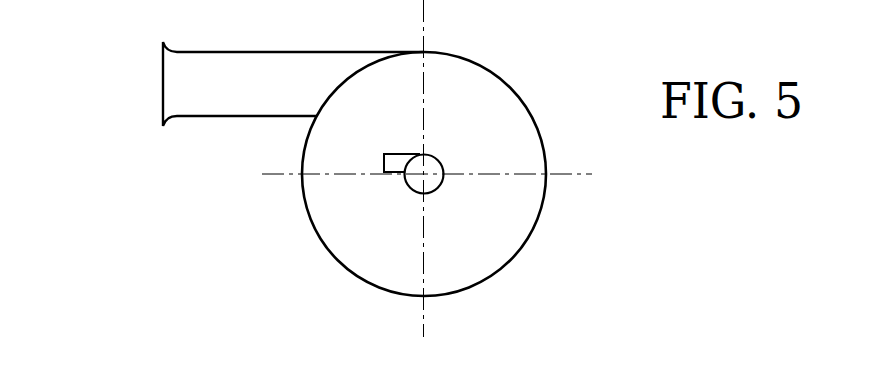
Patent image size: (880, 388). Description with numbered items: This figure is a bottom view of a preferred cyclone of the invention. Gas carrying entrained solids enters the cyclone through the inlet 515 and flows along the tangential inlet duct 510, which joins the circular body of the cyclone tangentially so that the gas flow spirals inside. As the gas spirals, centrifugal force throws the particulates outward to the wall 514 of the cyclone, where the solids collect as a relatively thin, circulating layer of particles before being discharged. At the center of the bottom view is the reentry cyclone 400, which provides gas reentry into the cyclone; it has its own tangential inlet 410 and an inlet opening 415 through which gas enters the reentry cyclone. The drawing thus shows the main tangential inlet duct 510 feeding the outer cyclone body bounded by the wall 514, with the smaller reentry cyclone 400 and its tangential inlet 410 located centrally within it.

The reentry cyclone 400 is at (441, 158).
The tangential inlet 410 is at (402, 153).
The inlet opening 415 is at (385, 165).
The tangential inlet duct 510 is at (243, 52).
The wall 514 is at (541, 210).
The inlet 515 is at (163, 83).